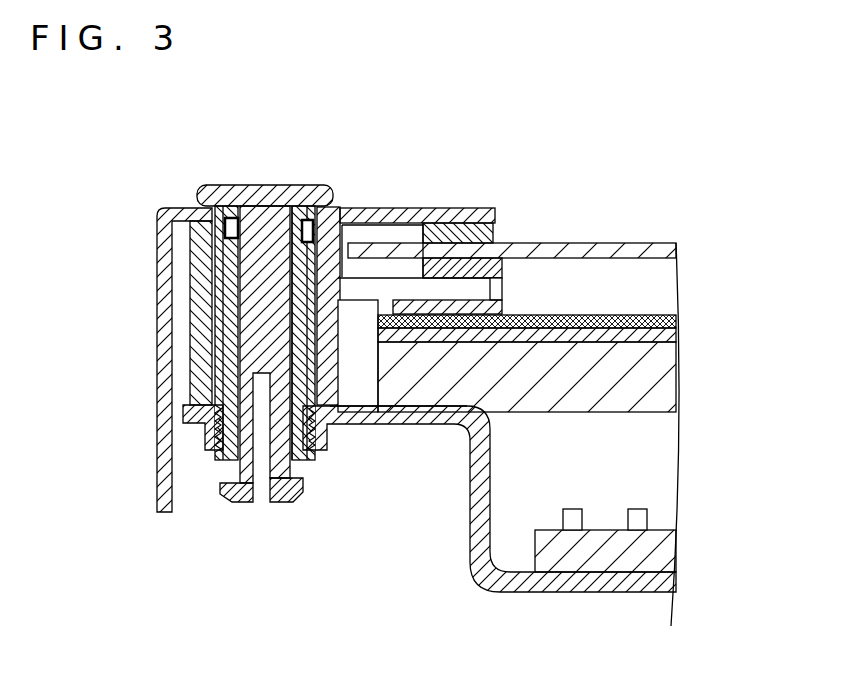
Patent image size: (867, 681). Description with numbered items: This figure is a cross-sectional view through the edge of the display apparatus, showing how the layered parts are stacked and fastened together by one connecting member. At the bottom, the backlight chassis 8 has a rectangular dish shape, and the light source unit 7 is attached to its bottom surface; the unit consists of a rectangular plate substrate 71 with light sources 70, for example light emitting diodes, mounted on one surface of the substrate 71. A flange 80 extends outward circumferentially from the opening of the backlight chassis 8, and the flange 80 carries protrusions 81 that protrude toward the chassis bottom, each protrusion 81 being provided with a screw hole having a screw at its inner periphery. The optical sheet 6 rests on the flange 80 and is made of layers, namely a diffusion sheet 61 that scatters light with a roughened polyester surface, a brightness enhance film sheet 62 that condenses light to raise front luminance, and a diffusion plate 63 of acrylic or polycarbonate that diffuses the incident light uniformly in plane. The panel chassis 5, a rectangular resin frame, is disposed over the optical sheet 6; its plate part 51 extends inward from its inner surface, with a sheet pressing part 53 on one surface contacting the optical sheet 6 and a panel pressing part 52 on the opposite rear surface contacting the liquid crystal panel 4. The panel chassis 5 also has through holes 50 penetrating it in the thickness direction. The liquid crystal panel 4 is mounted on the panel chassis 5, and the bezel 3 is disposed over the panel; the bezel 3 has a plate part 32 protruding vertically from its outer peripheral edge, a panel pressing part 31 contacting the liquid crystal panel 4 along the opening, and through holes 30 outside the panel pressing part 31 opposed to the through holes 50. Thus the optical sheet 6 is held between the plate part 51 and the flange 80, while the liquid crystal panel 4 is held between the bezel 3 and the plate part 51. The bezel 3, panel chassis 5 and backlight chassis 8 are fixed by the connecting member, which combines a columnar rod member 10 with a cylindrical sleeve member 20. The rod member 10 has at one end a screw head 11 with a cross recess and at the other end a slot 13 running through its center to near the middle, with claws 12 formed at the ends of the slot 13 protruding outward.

The bezel 3 is at (400, 208).
The liquid crystal panel 4 is at (640, 243).
The panel chassis 5 is at (327, 387).
The optical sheet 6 is at (588, 357).
The light source unit 7 is at (678, 533).
The backlight chassis 8 is at (482, 580).
The rod member 10 is at (250, 281).
The screw head 11 is at (253, 185).
The claws 12 is at (240, 485).
The slot 13 is at (265, 478).
The sleeve member 20 is at (222, 478).
The through holes 30 is at (222, 182).
The panel pressing part 31 is at (470, 222).
The plate part 32 is at (158, 325).
The through holes 50 is at (306, 205).
The plate part 51 is at (503, 290).
The panel pressing part 52 is at (505, 270).
The sheet pressing part 53 is at (507, 308).
The diffusion sheet 61 is at (663, 326).
The BEF sheet 62 is at (672, 338).
The diffusion plate 63 is at (562, 378).
The light source 70 is at (648, 520).
The substrate 71 is at (660, 557).
The flange 80 is at (413, 420).
The protrusions 81 is at (207, 437).